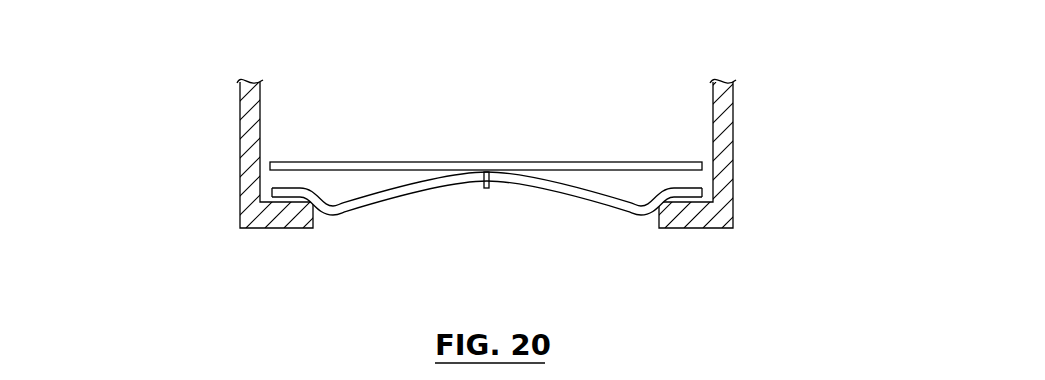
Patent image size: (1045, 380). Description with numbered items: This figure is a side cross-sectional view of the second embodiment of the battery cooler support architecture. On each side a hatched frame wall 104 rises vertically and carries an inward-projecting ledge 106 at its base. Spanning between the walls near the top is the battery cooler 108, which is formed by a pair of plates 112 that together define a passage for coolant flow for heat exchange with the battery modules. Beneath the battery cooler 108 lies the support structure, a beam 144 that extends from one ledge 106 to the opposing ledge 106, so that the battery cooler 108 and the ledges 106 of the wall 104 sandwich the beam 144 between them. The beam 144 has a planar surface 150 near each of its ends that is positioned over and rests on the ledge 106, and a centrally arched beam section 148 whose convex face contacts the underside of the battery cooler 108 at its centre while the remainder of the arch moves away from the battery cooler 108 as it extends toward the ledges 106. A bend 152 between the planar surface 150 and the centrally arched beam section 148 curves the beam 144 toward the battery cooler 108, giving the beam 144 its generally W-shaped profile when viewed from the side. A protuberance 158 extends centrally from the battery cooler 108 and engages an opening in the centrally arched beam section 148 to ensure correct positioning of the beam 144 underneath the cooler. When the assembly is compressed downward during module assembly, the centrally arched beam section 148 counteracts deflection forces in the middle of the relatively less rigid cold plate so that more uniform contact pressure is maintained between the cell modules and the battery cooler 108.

The wall 104 is at (250, 104).
The ledge 106 is at (268, 215).
The battery cooler 108 is at (640, 165).
The plate 112 is at (391, 162).
The beam 144 is at (587, 197).
The centrally arched beam section 148 is at (437, 180).
The planar surface 150 is at (297, 193).
The bend 152 is at (335, 212).
The protuberance 158 is at (492, 189).